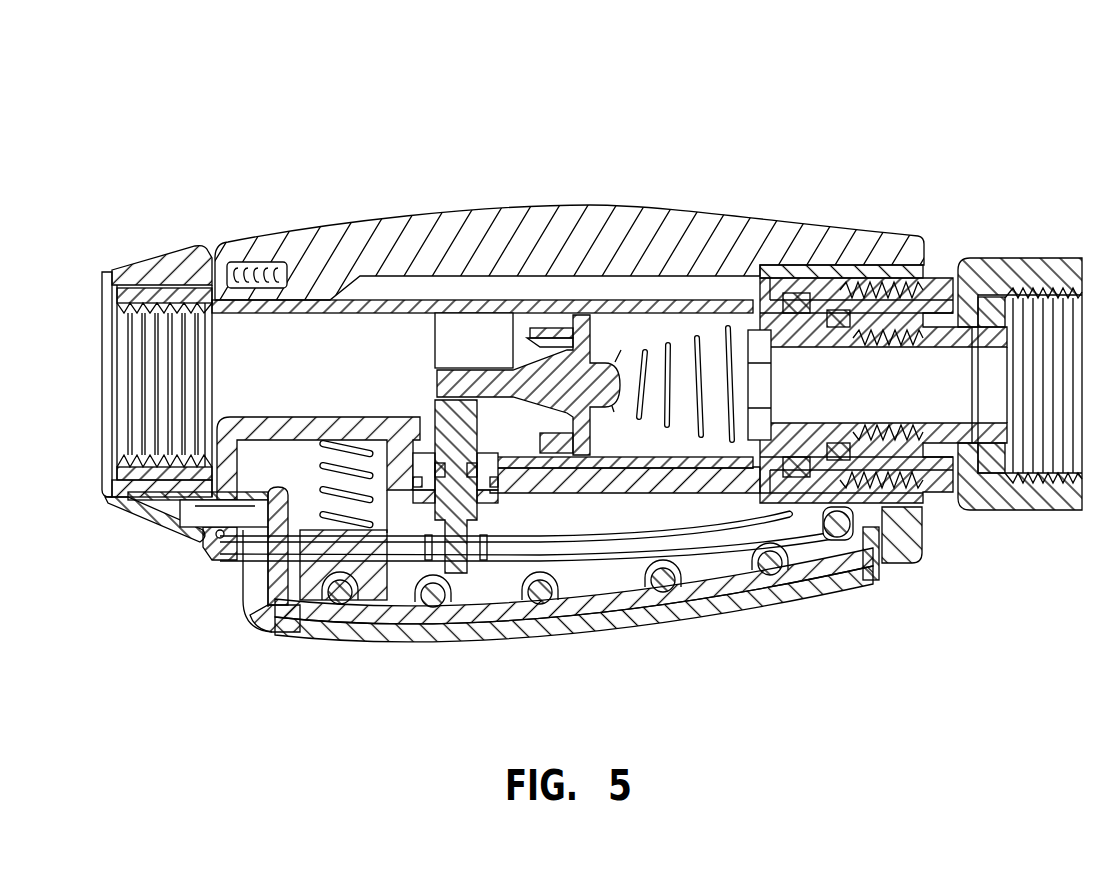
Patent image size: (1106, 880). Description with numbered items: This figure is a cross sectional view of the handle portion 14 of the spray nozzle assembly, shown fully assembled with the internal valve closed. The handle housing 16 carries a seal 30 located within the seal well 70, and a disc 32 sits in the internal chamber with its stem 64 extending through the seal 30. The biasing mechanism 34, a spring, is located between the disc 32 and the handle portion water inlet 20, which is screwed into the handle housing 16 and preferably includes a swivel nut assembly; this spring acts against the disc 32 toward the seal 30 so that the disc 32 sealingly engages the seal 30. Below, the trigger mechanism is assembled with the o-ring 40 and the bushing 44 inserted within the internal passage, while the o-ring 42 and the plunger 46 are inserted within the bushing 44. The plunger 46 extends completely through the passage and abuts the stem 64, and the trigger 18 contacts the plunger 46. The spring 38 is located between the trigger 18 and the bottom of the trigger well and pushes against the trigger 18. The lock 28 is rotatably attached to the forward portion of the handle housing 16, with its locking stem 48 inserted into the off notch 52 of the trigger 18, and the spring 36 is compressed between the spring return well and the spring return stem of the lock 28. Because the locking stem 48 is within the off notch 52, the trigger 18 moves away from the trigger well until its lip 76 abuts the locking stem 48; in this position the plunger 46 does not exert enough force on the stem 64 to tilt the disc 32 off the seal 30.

The handle portion 14 is at (876, 128).
The handle housing 16 is at (440, 243).
The trigger 18 is at (820, 597).
The handle portion water inlet 20 is at (980, 218).
The lock 28 is at (118, 268).
The seal 30 is at (553, 305).
The disc 32 is at (543, 328).
The biasing mechanism 34 is at (760, 280).
The spring 36 is at (232, 262).
The spring 38 is at (300, 465).
The o-ring 40 is at (418, 455).
The o-ring 42 is at (455, 490).
The bushing 44 is at (370, 535).
The plunger 46 is at (483, 520).
The locking stem 48 is at (245, 530).
The off notch 52 is at (258, 612).
The stem 64 is at (447, 367).
The seal well 70 is at (695, 330).
The lip 76 is at (288, 598).